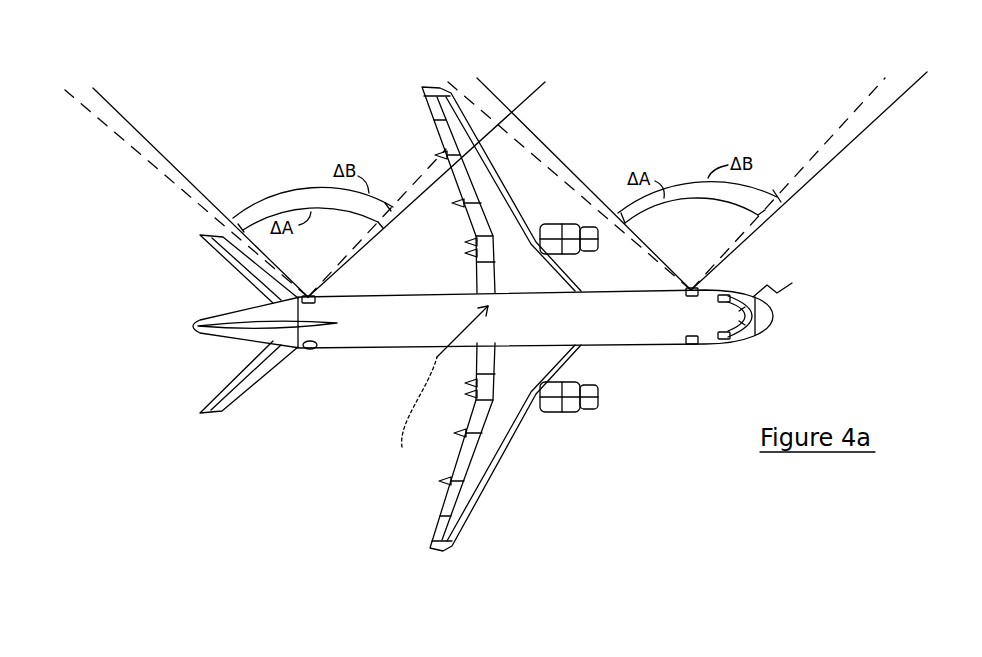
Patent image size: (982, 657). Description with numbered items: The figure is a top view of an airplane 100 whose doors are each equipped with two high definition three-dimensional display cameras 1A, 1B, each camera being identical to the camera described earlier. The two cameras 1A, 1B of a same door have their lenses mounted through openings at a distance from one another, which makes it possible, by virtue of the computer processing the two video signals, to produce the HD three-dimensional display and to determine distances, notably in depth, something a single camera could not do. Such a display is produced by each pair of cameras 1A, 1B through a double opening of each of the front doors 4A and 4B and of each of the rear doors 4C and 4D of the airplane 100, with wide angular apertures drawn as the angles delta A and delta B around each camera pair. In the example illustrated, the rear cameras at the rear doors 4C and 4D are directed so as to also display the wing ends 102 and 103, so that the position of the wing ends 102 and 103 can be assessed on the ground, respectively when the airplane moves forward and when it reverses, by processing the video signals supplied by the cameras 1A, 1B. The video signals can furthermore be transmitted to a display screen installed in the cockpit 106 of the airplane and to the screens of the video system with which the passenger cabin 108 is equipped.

The airplane 100 is at (405, 402).
The wing end 102 is at (422, 87).
The wing end 103 is at (454, 548).
The cockpit 106 is at (805, 260).
The passenger cabin 108 is at (439, 404).
The HD 3D display camera 1A is at (307, 296).
The HD 3D display camera 1B is at (309, 296).
The front door 4A is at (684, 297).
The front door 4B is at (692, 345).
The rear door 4C is at (317, 300).
The rear door 4D is at (310, 349).